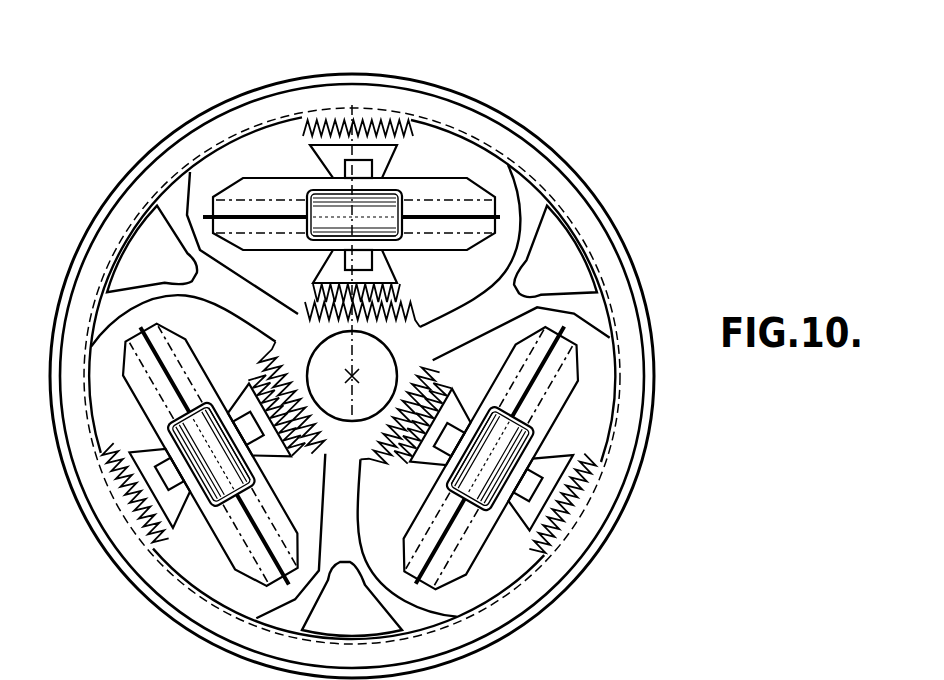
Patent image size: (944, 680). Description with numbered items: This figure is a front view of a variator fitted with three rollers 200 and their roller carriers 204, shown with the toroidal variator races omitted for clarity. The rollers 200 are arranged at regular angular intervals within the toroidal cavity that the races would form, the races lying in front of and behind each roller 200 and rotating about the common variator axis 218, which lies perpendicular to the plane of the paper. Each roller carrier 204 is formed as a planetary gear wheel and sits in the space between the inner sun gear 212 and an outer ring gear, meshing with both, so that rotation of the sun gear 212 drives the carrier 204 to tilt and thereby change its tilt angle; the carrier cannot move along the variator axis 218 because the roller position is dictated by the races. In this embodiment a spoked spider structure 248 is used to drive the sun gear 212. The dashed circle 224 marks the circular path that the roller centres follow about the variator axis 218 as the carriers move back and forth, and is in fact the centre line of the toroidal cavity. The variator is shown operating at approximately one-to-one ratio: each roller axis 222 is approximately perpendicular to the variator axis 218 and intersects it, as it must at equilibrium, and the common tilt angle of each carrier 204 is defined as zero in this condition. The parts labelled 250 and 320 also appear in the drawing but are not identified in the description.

The roller 200 is at (388, 205).
The roller carrier 204 is at (312, 182).
The inner sun gear 212 is at (280, 366).
The variator axis 218 is at (354, 378).
The roller axis 222 is at (345, 160).
The circular path of roller centres 224 is at (470, 322).
The spoked spider structure 248 is at (255, 597).
The roller carrier 250 is at (140, 303).
The outer spring seat 320 is at (197, 500).